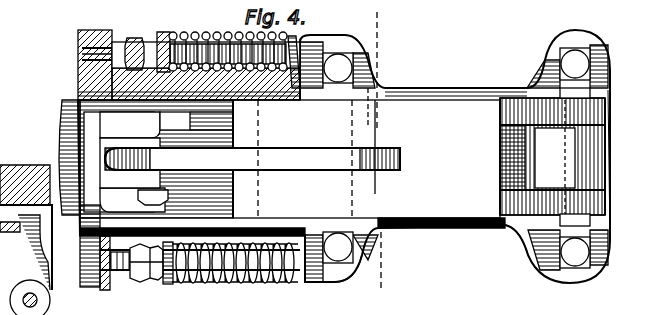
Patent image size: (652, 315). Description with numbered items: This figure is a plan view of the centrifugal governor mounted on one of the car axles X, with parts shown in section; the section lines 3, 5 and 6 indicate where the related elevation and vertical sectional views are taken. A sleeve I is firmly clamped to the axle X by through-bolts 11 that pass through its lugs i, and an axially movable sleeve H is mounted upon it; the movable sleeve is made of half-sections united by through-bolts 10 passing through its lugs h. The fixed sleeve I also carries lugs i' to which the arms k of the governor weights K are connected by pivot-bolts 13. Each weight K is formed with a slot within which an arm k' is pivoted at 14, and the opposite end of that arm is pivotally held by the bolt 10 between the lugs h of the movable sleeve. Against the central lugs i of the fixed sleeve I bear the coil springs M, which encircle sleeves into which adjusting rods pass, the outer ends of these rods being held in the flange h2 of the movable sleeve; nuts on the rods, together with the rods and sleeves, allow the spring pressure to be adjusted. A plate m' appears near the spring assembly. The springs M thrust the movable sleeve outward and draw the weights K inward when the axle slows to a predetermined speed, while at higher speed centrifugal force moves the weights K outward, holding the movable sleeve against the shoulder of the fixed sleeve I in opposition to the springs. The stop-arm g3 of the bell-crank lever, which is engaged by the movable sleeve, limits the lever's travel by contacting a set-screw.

The governor weight K is at (344, 156).
The section line 6 is at (212, 34).
The coil spring M is at (233, 157).
The plate m' is at (302, 56).
The through-bolt 11 is at (454, 162).
The lug i is at (439, 277).
The section line 3 is at (376, 64).
The section line 5 is at (396, 298).
The axle X is at (72, 130).
The lug h is at (156, 159).
The through-bolt 10 is at (153, 197).
The arm k' is at (252, 159).
The pivot 14 is at (375, 194).
The lug i' is at (552, 156).
The arm k is at (566, 156).
The pivot-bolt 13 is at (600, 228).
The sleeve I is at (512, 233).
The flange h2 is at (80, 282).
The stop-arm g3 is at (26, 240).